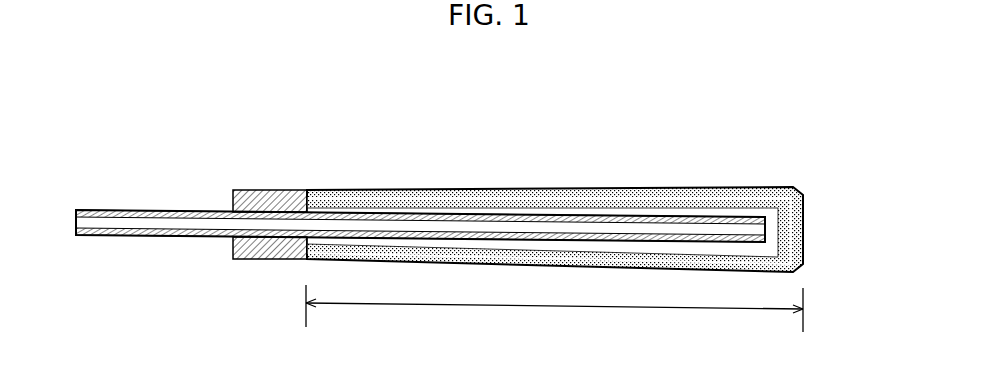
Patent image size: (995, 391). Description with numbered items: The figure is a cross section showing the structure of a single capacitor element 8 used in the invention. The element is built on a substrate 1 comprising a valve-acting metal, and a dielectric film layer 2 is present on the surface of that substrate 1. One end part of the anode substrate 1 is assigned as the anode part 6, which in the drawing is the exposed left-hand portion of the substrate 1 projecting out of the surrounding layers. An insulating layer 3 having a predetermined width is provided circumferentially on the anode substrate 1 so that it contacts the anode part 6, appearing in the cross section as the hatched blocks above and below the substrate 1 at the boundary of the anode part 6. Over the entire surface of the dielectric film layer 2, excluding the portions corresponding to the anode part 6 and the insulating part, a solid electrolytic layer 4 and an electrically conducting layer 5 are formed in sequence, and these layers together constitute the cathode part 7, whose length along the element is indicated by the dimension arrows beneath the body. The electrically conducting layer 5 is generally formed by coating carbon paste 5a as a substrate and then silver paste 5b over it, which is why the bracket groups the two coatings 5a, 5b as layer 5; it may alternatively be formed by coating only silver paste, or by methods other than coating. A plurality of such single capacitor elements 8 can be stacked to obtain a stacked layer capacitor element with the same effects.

The substrate 1 is at (122, 223).
The dielectric film layer 2 is at (185, 231).
The insulating layer 3 is at (281, 199).
The solid electrolytic layer 4 is at (773, 222).
The electrically conducting layer 5 is at (610, 229).
The carbon paste 5a is at (790, 247).
The silver paste 5b is at (798, 209).
The anode part 6 is at (407, 208).
The cathode part 7 is at (558, 347).
The single capacitor element 8 is at (610, 169).